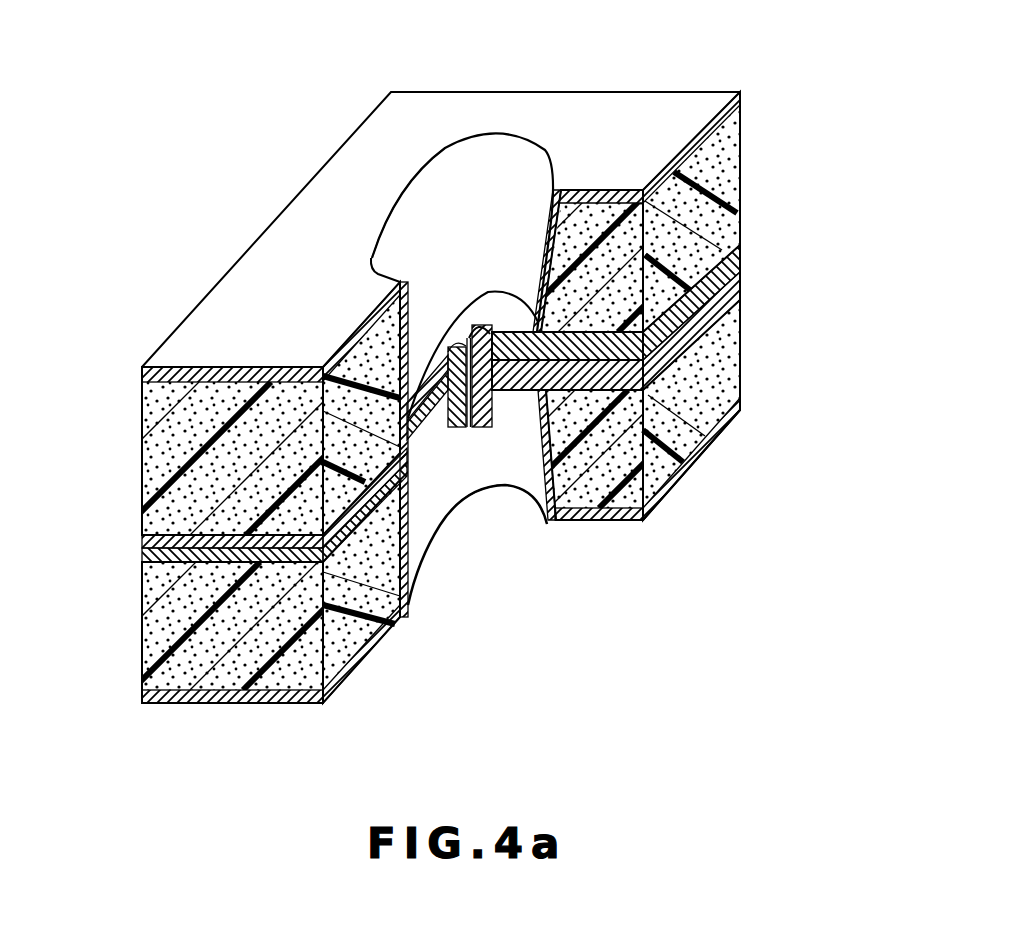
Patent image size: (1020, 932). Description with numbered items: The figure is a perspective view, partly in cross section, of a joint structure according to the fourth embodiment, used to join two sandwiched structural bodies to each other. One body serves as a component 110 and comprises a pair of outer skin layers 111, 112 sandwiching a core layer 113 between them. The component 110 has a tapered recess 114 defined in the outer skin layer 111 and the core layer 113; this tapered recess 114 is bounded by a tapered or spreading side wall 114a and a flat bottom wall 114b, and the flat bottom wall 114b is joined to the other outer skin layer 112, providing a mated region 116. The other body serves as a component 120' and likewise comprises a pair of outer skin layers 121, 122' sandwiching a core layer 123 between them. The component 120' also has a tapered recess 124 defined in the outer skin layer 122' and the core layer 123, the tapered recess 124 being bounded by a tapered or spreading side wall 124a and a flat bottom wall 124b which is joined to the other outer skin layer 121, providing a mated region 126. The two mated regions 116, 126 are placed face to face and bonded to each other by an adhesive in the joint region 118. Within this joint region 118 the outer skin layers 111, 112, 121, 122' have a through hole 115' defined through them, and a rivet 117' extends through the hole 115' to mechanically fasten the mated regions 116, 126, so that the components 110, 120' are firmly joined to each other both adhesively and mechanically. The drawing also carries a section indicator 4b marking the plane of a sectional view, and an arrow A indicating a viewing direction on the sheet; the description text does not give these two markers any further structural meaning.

The component 110 is at (120, 368).
The component 120' is at (222, 591).
The outer skin layer 111 is at (738, 100).
The core layer 113 is at (732, 184).
The outer skin layer 112 is at (725, 268).
The outer skin layer 121 is at (732, 276).
The core layer 123 is at (722, 337).
The outer skin layer 122' is at (733, 448).
The mated region 126 is at (508, 390).
The tapered recess 114 is at (515, 168).
The tapered side wall 114a is at (384, 214).
The flat bottom wall 114b is at (483, 308).
The mated region 116 is at (478, 340).
The rivet 117' is at (380, 258).
The joint region 118 is at (436, 420).
The through hole 115' is at (459, 482).
The tapered recess 124 is at (505, 502).
The tapered side wall 124a is at (478, 482).
The flat bottom wall 124b is at (538, 518).
The section line for Fig. 4b is at (371, 257).
The viewing direction arrow A is at (632, 549).